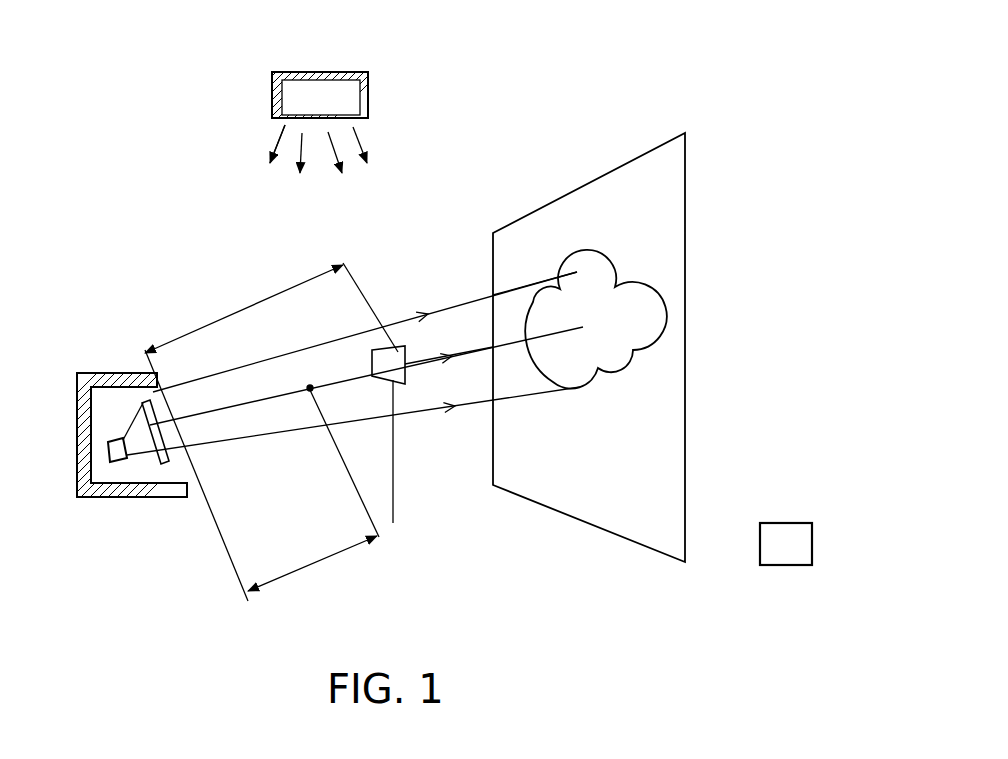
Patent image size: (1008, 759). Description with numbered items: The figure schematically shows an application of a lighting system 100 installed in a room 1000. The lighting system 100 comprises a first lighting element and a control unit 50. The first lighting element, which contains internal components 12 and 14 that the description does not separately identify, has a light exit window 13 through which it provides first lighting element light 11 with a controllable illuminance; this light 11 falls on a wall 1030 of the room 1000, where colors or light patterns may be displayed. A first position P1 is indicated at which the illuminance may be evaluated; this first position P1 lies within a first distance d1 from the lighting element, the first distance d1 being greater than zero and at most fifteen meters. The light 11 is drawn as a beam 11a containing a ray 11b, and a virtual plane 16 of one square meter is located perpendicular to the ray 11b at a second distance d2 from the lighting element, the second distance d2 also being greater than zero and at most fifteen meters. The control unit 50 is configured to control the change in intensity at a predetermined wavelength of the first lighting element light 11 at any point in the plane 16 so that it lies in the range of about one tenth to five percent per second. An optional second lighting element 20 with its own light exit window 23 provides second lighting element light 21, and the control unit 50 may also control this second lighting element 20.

The room 1000 is at (603, 77).
The lighting system 100 is at (88, 288).
The light source 12 is at (113, 462).
The light exit window 13 is at (167, 402).
The mirror 14 is at (158, 465).
The virtual plane 16 is at (398, 357).
The first lighting element light 11 is at (453, 302).
The beam 11a is at (475, 317).
The ray 11b is at (417, 362).
The second lighting element 20 is at (323, 70).
The second lighting element light 21 is at (360, 143).
The light exit window 23 is at (283, 118).
The wall 1030 is at (675, 185).
The control unit 50 is at (813, 508).
The first position P1 is at (310, 392).
The first distance d1 is at (313, 562).
The second distance d2 is at (235, 315).